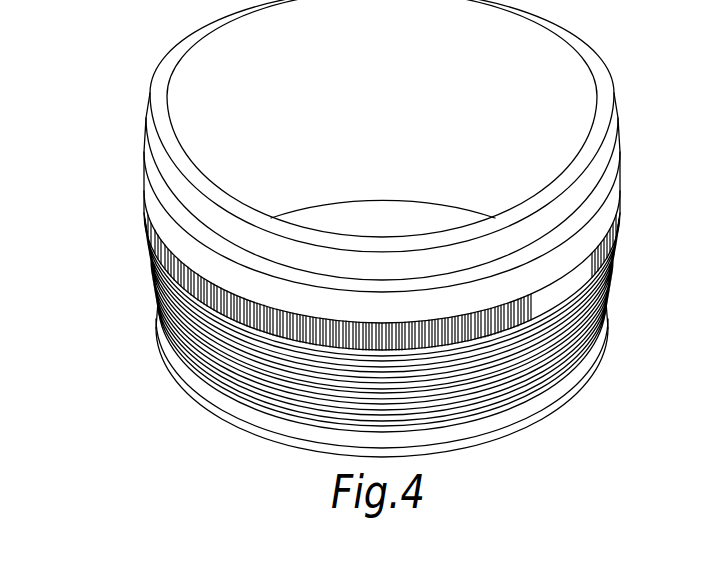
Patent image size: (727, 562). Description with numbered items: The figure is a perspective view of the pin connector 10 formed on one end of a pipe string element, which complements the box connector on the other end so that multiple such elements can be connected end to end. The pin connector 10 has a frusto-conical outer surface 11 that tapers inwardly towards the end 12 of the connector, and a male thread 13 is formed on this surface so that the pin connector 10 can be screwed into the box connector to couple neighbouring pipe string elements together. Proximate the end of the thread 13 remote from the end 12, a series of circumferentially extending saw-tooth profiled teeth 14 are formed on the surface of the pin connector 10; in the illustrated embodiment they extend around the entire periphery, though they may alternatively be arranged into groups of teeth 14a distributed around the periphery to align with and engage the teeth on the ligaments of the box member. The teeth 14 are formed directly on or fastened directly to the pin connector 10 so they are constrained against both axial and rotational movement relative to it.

The pin connector 10 is at (151, 152).
The frusto-conical outer surface 11 is at (621, 288).
The end of the connector 12 is at (590, 373).
The male thread 13 is at (157, 328).
The saw-tooth profiled teeth 14 is at (149, 244).
The groups of teeth 14a is at (382, 270).